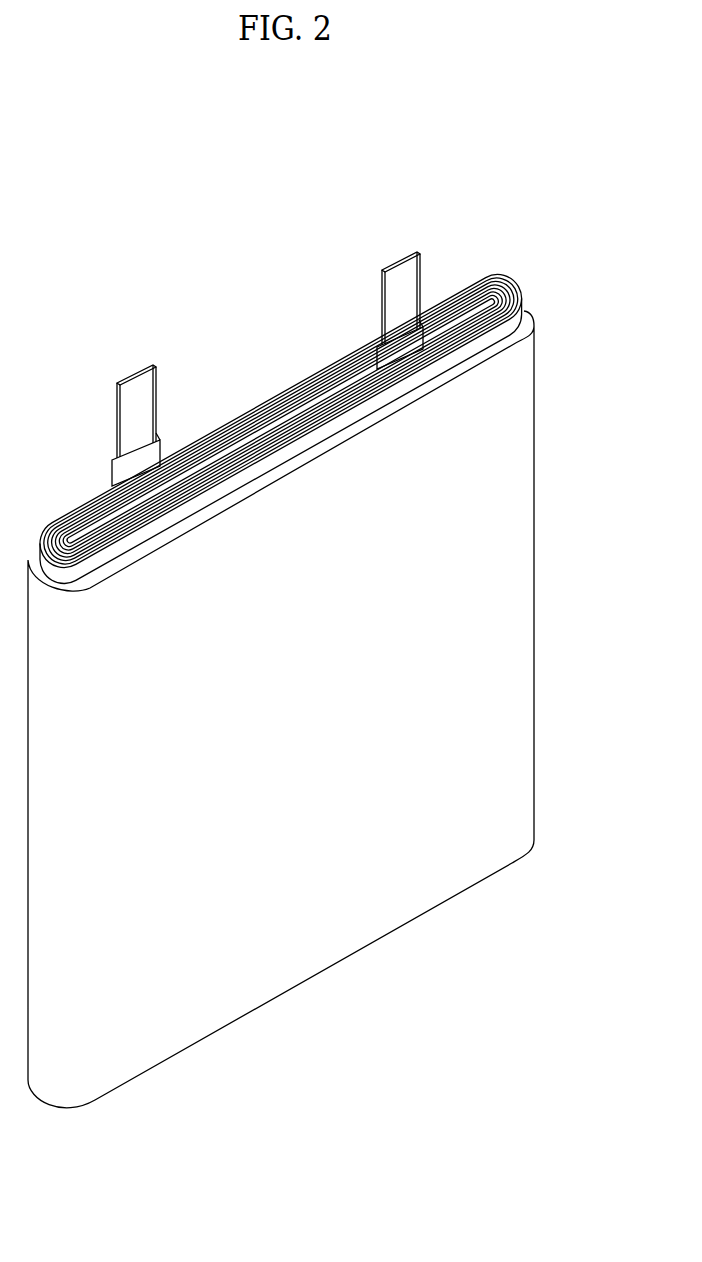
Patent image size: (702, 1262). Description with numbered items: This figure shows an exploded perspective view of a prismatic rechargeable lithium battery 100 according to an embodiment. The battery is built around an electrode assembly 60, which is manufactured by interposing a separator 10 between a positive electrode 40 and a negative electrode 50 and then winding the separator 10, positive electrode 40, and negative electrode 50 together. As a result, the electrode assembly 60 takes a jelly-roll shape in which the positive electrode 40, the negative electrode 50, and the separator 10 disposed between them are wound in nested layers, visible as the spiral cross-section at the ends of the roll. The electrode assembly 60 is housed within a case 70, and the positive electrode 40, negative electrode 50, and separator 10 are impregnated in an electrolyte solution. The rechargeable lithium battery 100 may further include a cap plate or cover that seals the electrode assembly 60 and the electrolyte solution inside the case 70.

The rechargeable lithium battery 100 is at (117, 282).
The separator 10 is at (506, 287).
The positive electrode 40 is at (522, 290).
The negative electrode 50 is at (484, 292).
The electrode assembly 60 is at (312, 349).
The case 70 is at (520, 573).